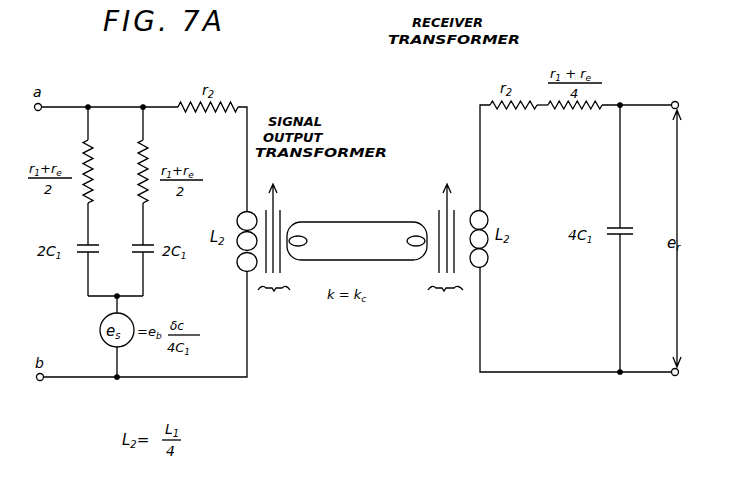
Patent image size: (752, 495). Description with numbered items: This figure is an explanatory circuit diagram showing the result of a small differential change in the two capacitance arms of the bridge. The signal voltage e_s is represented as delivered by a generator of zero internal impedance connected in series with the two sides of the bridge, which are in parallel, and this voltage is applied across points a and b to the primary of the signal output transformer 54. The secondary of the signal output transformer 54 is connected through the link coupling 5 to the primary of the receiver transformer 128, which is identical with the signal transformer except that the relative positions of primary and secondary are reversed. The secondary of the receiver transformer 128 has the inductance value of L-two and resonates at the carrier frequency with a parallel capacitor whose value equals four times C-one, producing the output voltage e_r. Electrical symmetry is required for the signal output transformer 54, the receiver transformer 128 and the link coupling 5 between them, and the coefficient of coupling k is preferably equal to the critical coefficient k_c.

The signal output transformer 54 is at (293, 198).
The link coupling 5 is at (367, 215).
The receiver transformer 128 is at (437, 188).